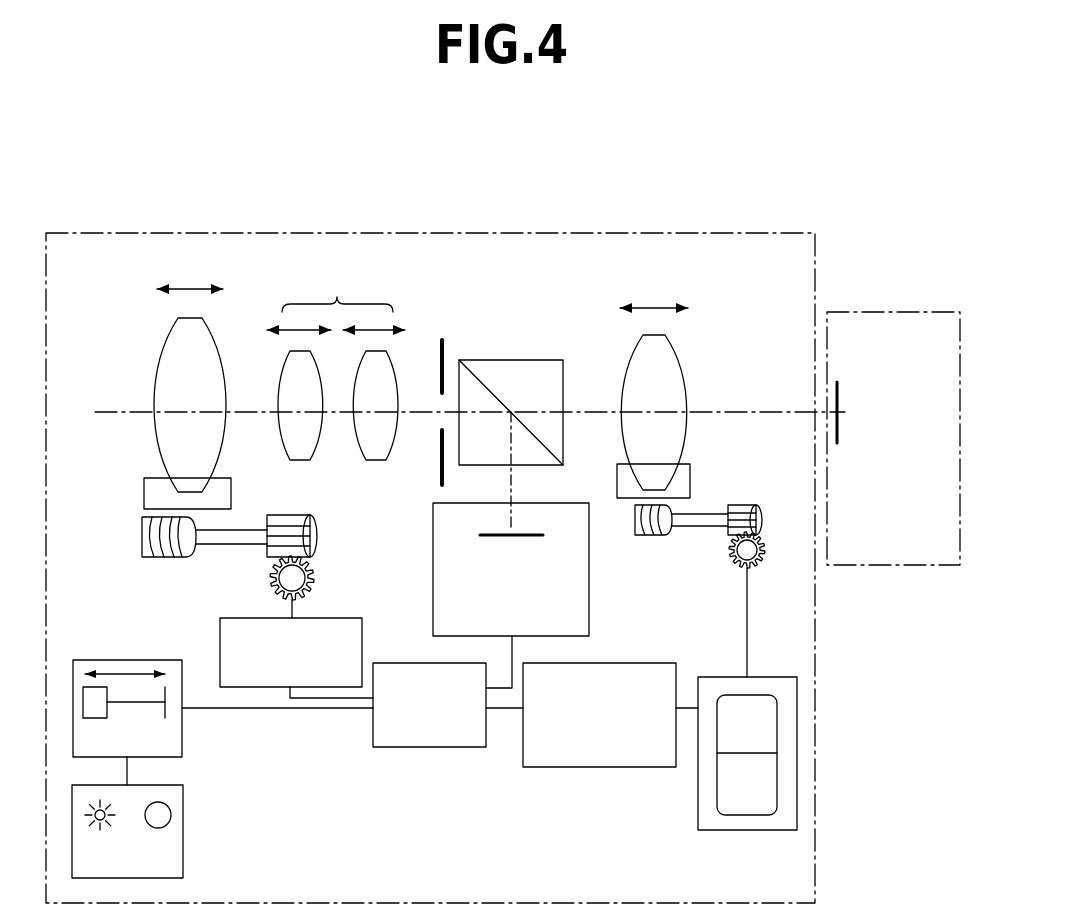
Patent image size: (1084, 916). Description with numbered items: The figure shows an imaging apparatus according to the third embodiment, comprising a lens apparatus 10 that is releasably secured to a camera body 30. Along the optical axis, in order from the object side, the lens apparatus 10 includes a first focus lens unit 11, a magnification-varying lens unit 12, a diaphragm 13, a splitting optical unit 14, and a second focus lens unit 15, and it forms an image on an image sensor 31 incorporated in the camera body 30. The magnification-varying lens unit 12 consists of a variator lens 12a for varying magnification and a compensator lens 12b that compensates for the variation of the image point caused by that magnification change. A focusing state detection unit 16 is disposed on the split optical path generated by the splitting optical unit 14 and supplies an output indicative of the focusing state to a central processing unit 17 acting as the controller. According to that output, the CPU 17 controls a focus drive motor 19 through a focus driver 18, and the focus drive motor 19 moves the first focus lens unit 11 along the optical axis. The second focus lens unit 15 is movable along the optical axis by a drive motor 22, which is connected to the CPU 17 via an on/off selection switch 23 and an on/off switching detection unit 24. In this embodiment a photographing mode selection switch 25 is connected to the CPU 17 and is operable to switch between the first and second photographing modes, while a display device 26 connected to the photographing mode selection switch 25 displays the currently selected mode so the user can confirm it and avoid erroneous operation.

The lens apparatus 10 is at (583, 233).
The first focus lens unit 11 is at (155, 385).
The magnification-varying lens unit 12 is at (349, 387).
The variator lens 12a is at (322, 437).
The compensator lens 12b is at (397, 437).
The diaphragm 13 is at (447, 355).
The splitting optical unit 14 is at (546, 360).
The second focus lens unit 15 is at (687, 385).
The focusing state detection unit 16 is at (433, 549).
The central processing unit (CPU) 17 is at (394, 663).
The focus driver 18 is at (220, 634).
The focus drive motor 19 is at (262, 548).
The drive motor 22 is at (730, 568).
The on/off selection switch 23 is at (777, 677).
The on/off switching detection unit 24 is at (598, 768).
The photographing mode selection switch 25 is at (187, 738).
The display device 26 is at (188, 840).
The camera body 30 is at (881, 310).
The image sensor 31 is at (840, 412).